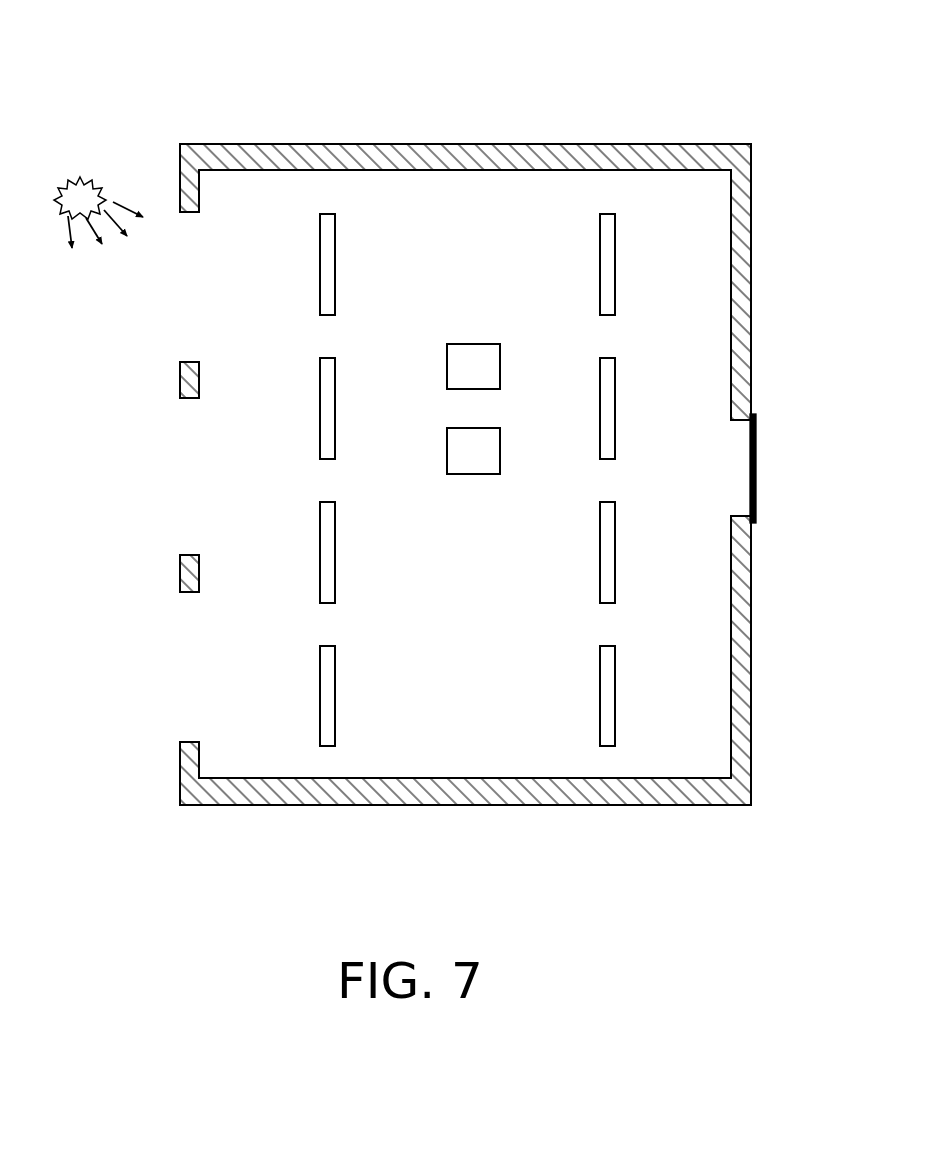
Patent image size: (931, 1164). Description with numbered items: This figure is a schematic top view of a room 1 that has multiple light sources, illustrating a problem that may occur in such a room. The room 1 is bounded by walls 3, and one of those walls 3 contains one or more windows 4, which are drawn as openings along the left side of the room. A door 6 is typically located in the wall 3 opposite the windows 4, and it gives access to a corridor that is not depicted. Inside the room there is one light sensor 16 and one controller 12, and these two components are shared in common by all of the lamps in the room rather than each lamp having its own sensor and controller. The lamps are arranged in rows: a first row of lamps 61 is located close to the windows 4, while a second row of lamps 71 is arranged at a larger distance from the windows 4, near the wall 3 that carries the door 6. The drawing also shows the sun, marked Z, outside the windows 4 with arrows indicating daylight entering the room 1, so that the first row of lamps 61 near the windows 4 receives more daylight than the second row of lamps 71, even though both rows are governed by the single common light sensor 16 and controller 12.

The room 1 is at (638, 70).
The walls 3 is at (255, 143).
The windows 4 is at (190, 308).
The door 6 is at (758, 468).
The controller 12 is at (463, 380).
The light sensor 16 is at (463, 465).
The first row of lamps 61 is at (327, 828).
The second row of lamps 71 is at (607, 828).
The sunlight Z is at (98, 198).